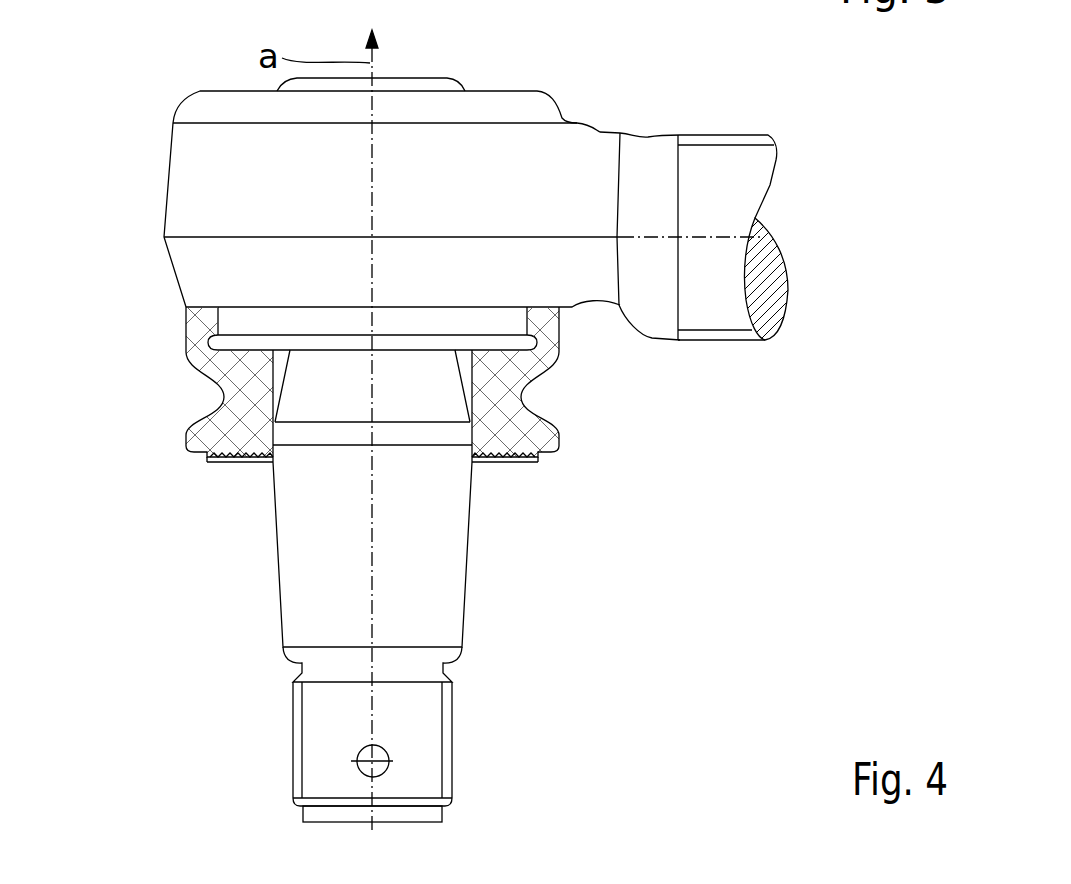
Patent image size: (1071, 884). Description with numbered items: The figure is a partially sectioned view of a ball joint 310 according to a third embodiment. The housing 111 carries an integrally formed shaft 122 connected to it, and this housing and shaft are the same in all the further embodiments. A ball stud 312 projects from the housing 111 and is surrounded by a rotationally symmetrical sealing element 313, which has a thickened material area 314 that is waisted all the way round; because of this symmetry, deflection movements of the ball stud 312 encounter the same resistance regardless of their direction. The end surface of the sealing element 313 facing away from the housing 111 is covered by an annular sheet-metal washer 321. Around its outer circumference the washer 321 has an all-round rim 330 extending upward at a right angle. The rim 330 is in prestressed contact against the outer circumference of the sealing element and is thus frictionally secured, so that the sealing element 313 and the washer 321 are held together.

The housing 111 is at (163, 167).
The shaft 122 is at (720, 160).
The ball joint 310 is at (610, 118).
The ball stud 312 is at (268, 590).
The sealing element 313 is at (198, 393).
The thickened material area 314 is at (503, 420).
The annular sheet-metal washer 321 is at (508, 472).
The rim 330 is at (560, 456).